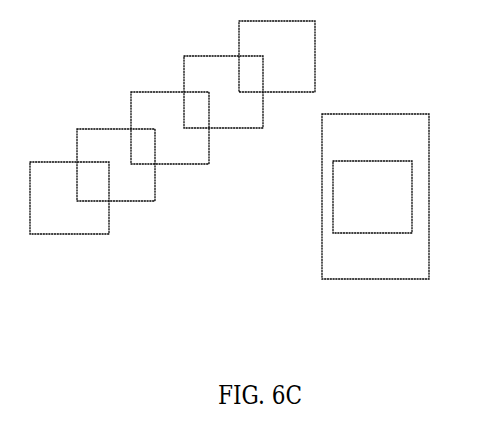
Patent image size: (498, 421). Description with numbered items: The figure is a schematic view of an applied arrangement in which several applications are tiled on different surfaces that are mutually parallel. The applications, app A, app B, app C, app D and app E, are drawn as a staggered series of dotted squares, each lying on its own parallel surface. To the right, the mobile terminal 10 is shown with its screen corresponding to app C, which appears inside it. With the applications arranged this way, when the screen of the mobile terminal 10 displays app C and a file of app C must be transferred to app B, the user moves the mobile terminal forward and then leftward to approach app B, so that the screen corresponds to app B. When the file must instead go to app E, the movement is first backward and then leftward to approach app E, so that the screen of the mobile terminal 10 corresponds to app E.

The mobile terminal 10 is at (375, 113).
The app A is at (69, 198).
The app B is at (116, 165).
The app C is at (170, 128).
The app D is at (223, 92).
The app E is at (277, 56).